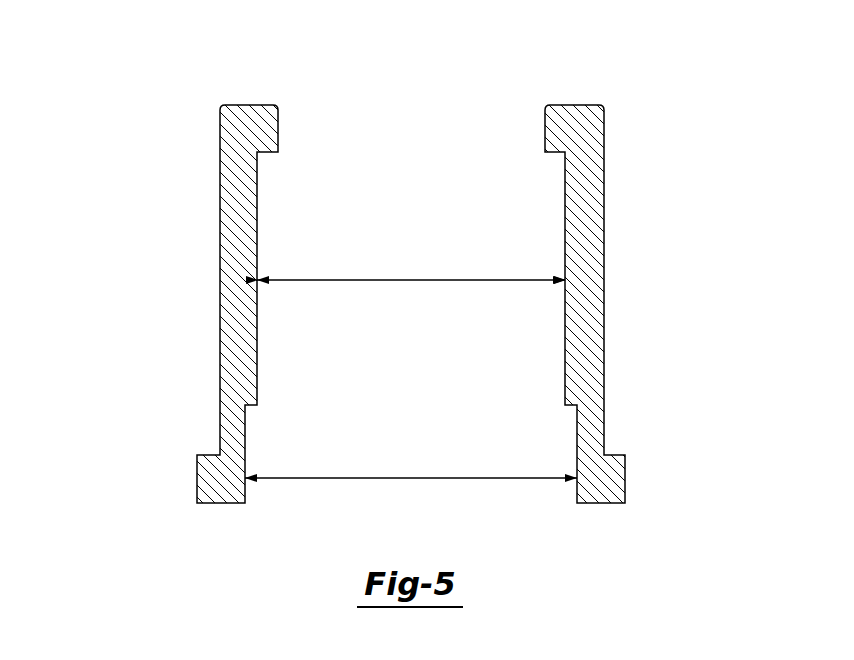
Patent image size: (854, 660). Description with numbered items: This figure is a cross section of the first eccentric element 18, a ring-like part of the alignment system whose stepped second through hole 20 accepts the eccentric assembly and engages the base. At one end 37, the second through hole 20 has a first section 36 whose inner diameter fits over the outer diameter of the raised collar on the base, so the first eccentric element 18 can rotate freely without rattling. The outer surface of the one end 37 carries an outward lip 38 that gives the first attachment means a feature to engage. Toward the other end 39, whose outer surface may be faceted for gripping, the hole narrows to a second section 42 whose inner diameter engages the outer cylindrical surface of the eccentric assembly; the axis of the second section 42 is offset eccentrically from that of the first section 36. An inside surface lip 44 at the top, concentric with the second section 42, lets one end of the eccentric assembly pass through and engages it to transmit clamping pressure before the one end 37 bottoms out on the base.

The first eccentric element 18 is at (340, 259).
The second through hole 20 is at (400, 355).
The first section 36 is at (403, 478).
The one end 37 is at (207, 532).
The outward lip 38 is at (197, 478).
The other end 39 is at (393, 259).
The second section 42 is at (402, 280).
The inside surface lip 44 is at (254, 108).